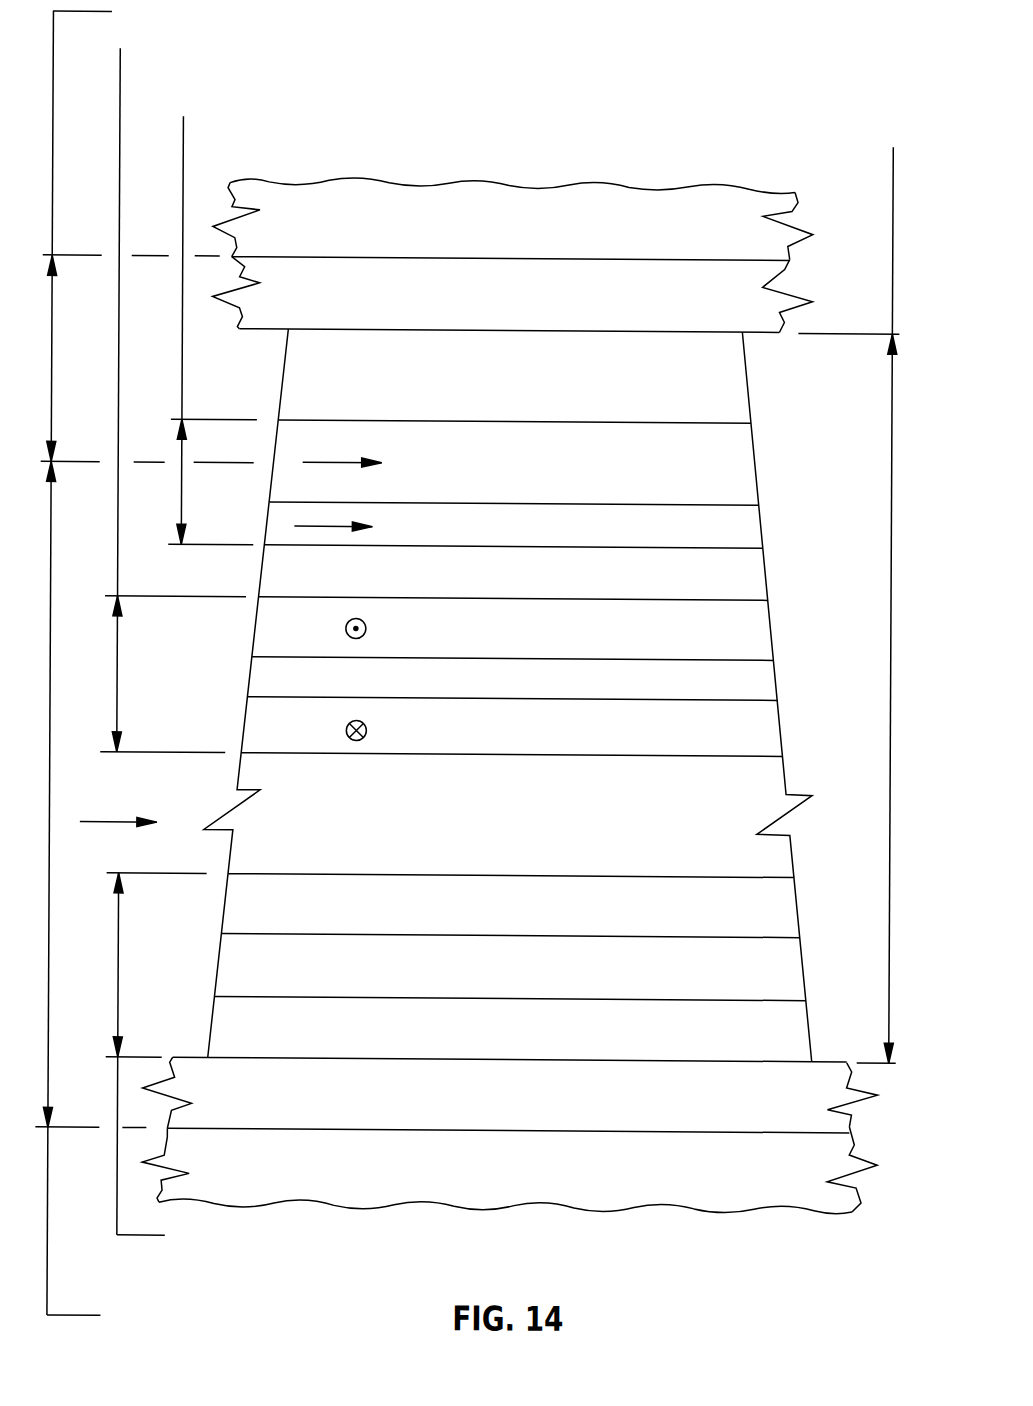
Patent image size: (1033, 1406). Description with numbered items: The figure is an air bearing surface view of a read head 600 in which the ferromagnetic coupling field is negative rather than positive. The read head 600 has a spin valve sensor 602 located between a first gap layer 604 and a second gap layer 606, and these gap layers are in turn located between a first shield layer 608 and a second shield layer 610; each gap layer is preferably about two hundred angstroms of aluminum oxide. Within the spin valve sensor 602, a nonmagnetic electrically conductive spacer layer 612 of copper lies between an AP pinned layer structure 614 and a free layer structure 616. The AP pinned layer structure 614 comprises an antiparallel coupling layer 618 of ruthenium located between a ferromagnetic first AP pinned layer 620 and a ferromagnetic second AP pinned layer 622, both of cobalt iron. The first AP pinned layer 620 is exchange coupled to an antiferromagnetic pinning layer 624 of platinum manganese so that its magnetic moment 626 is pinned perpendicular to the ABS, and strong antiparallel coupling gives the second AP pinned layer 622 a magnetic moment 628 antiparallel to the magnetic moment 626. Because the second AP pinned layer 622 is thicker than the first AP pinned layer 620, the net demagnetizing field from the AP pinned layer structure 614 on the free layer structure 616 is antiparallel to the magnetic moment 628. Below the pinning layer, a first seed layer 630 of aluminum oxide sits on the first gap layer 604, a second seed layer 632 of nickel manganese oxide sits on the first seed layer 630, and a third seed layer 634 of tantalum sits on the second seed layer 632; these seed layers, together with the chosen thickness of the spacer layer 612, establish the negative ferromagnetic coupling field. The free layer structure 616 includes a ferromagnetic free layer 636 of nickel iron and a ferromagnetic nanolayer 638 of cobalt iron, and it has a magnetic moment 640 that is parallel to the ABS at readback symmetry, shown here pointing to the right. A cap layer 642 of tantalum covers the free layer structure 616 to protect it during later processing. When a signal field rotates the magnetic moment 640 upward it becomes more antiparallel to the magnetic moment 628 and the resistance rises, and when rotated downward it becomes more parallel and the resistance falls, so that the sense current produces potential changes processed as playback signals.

The read head 600 is at (580, 83).
The spin valve sensor 602 is at (894, 141).
The first gap layer 604 is at (747, 1112).
The second gap layer 606 is at (694, 300).
The first shield layer 608 is at (751, 1177).
The second shield layer 610 is at (691, 234).
The spacer layer 612 is at (708, 588).
The AP pinned layer structure 614 is at (120, 48).
The free layer structure 616 is at (184, 115).
The antiparallel coupling layer 618 is at (713, 689).
The first AP pinned layer 620 is at (713, 739).
The second AP pinned layer 622 is at (708, 641).
The antiferromagnetic pinning layer 624 is at (719, 825).
The magnetic moment of the first AP pinned layer 626 is at (349, 727).
The magnetic moment of the second AP pinned layer 628 is at (348, 626).
The first seed layer 630 is at (739, 1040).
The second seed layer 632 is at (734, 976).
The third seed layer 634 is at (729, 914).
The free layer 636 is at (702, 474).
The nanolayer 638 is at (705, 538).
The magnetic moment of the free layer structure 640 is at (327, 459).
The cap layer 642 is at (700, 388).